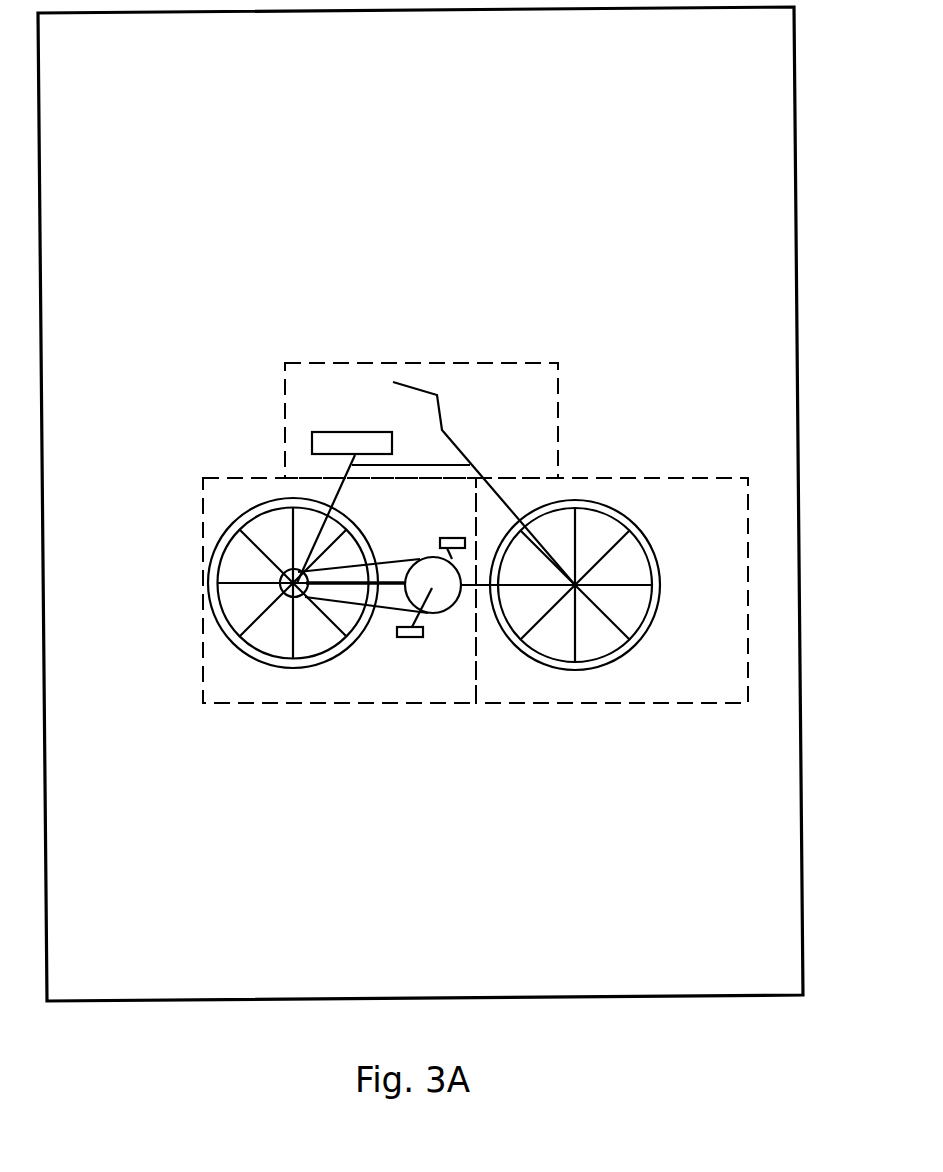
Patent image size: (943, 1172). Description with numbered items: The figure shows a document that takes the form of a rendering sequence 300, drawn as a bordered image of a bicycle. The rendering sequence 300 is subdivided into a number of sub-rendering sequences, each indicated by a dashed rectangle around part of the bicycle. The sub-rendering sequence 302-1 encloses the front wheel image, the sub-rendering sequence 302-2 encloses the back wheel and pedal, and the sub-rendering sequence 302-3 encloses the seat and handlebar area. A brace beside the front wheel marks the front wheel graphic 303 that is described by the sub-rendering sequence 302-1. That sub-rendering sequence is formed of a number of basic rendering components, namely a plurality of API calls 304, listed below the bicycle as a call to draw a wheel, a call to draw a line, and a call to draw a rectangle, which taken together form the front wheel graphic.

The rendering sequence 300 is at (420, 504).
The sub-rendering sequence 302-1 is at (650, 702).
The sub-rendering sequence 302-2 is at (210, 477).
The sub-rendering sequence 302-3 is at (558, 405).
The wheel 303 is at (660, 497).
The plurality of API calls 304 is at (642, 800).